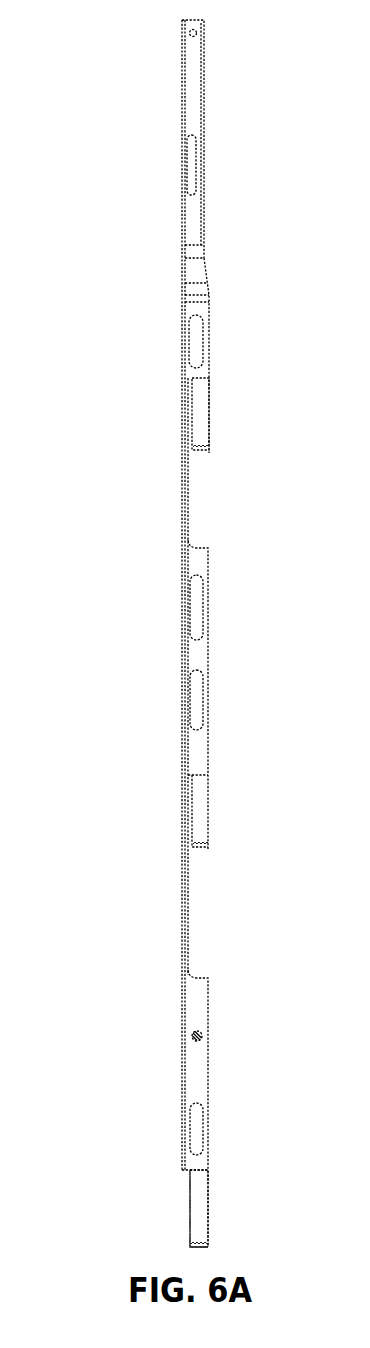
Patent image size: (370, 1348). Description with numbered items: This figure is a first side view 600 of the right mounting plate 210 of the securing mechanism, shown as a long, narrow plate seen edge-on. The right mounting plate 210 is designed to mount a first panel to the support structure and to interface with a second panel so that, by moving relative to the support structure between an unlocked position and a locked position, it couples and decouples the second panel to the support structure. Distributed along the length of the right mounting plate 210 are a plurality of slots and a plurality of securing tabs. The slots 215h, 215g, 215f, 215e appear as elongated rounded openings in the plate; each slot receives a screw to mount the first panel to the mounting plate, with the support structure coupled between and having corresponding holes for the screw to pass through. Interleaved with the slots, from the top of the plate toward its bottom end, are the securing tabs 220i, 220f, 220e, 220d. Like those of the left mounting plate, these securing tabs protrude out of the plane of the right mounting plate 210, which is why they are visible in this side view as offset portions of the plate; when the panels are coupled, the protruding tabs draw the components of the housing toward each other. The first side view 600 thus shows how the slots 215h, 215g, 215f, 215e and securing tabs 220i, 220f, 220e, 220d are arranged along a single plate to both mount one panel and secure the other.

The first side view 600 is at (137, 28).
The right mounting plate 210 is at (147, 216).
The securing tab 220i is at (190, 163).
The slot 215h is at (197, 342).
The securing tab 220f is at (197, 420).
The slot 215g is at (195, 607).
The slot 215f is at (195, 702).
The securing tab 220e is at (197, 815).
The slot 215e is at (195, 1128).
The securing tab 220d is at (195, 1198).